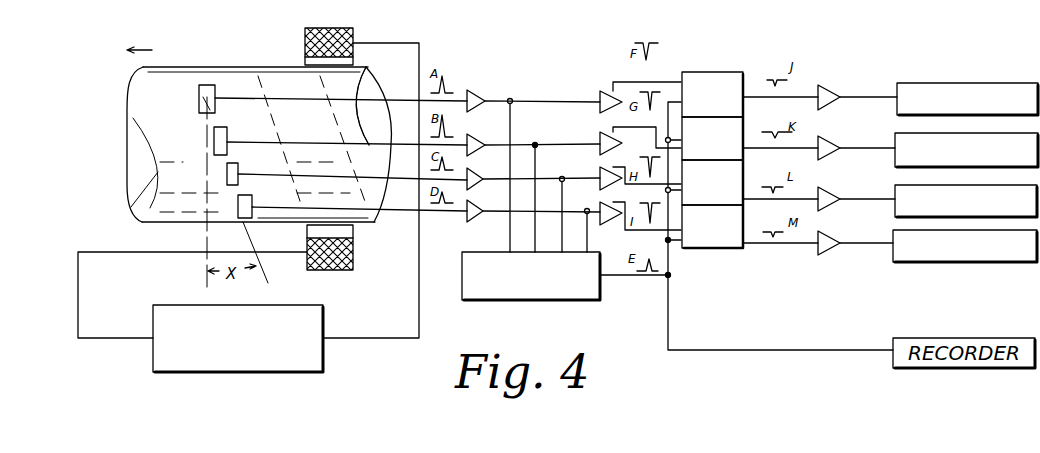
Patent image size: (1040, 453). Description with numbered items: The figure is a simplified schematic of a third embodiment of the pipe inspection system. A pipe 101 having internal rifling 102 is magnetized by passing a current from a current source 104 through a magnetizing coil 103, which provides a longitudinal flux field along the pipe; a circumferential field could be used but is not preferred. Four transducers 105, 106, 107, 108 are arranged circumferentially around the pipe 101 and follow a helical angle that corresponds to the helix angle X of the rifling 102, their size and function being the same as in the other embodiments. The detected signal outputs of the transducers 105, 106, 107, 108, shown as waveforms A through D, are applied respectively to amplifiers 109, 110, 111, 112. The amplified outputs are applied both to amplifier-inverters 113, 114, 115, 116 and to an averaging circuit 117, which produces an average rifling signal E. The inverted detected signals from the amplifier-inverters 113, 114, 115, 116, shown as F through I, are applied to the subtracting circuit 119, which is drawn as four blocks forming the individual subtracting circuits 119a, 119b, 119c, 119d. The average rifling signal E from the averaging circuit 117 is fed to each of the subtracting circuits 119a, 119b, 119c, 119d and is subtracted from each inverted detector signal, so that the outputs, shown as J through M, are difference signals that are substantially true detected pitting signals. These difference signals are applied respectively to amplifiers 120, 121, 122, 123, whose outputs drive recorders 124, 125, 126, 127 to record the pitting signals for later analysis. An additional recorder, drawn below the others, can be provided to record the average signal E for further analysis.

The pipe 101 is at (207, 66).
The rifling 102 is at (330, 88).
The magnetizing coil 103 is at (340, 28).
The current source 104 is at (192, 304).
The transducer 105 is at (216, 90).
The transducer 106 is at (228, 130).
The transducer 107 is at (239, 167).
The transducer 108 is at (253, 200).
The amplifier 109 is at (487, 82).
The amplifier 110 is at (487, 127).
The amplifier 111 is at (469, 169).
The amplifier 112 is at (470, 201).
The amplifier-inverter 113 is at (598, 101).
The amplifier-inverter 114 is at (598, 142).
The amplifier-inverter 115 is at (598, 177).
The amplifier-inverter 116 is at (598, 212).
The averaging circuit 117 is at (483, 251).
The subtracting circuit 119 is at (755, 171).
The subtracting circuit 119a is at (732, 78).
The subtracting circuit 119b is at (738, 127).
The subtracting circuit 119c is at (738, 178).
The subtracting circuit 119d is at (738, 230).
The amplifier 120 is at (827, 87).
The amplifier 121 is at (827, 137).
The amplifier 122 is at (827, 188).
The amplifier 123 is at (828, 232).
The recorder 124 is at (1012, 83).
The recorder 125 is at (1012, 133).
The recorder 126 is at (1010, 185).
The recorder 127 is at (945, 262).